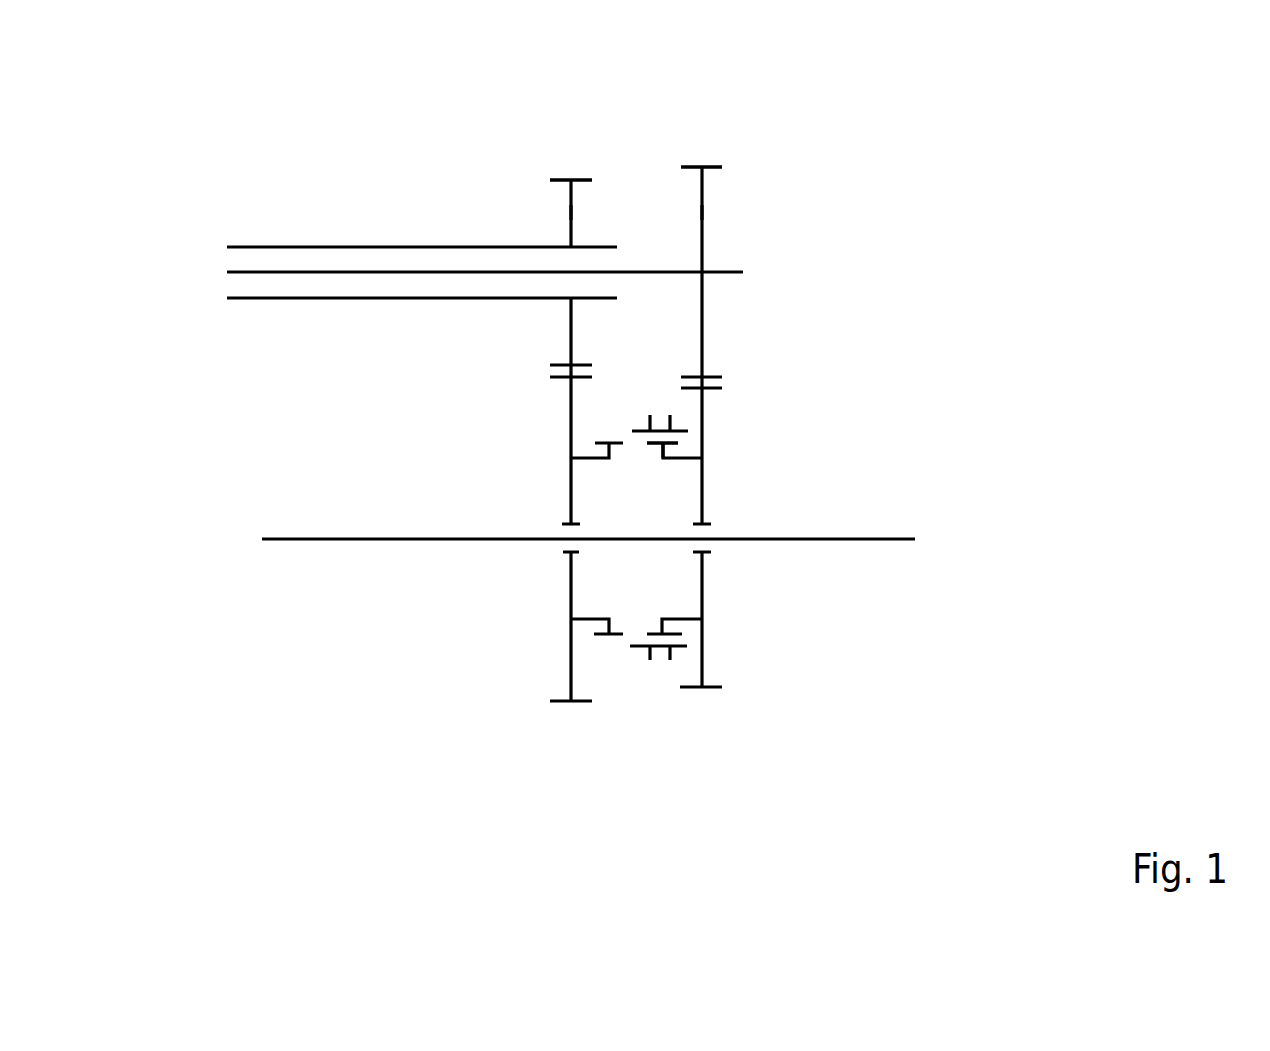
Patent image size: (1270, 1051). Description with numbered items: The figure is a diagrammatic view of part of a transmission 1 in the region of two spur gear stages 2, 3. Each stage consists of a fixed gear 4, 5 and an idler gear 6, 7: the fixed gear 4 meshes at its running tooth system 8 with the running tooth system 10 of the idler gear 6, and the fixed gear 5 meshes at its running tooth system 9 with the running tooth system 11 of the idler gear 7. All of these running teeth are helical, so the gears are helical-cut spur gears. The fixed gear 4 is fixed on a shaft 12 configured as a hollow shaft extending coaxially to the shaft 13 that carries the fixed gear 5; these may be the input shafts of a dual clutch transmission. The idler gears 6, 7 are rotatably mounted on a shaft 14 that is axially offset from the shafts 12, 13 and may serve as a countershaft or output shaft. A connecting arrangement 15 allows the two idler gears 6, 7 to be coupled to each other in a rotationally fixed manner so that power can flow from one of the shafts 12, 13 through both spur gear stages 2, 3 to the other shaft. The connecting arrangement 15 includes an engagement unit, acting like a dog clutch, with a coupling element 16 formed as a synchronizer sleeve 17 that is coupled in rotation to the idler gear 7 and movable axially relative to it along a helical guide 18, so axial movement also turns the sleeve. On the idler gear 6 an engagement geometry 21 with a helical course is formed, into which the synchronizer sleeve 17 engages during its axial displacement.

The transmission 1 is at (886, 141).
The spur gear stage 2 is at (570, 148).
The spur gear stage 3 is at (700, 143).
The fixed gear 4 is at (569, 212).
The fixed gear 5 is at (704, 213).
The idler gear 6 is at (571, 658).
The idler gear 7 is at (702, 665).
The running tooth system 8 is at (583, 178).
The running tooth system 9 is at (712, 166).
The running tooth system 10 is at (558, 378).
The running tooth system 11 is at (722, 390).
The shaft 12 is at (297, 247).
The shaft 13 is at (303, 272).
The shaft 14 is at (323, 539).
The connecting arrangement 15 is at (642, 688).
The coupling element 16 is at (690, 421).
The synchronizer sleeve 17 is at (690, 641).
The guide 18 is at (678, 442).
The engagement geometry 21 is at (595, 443).